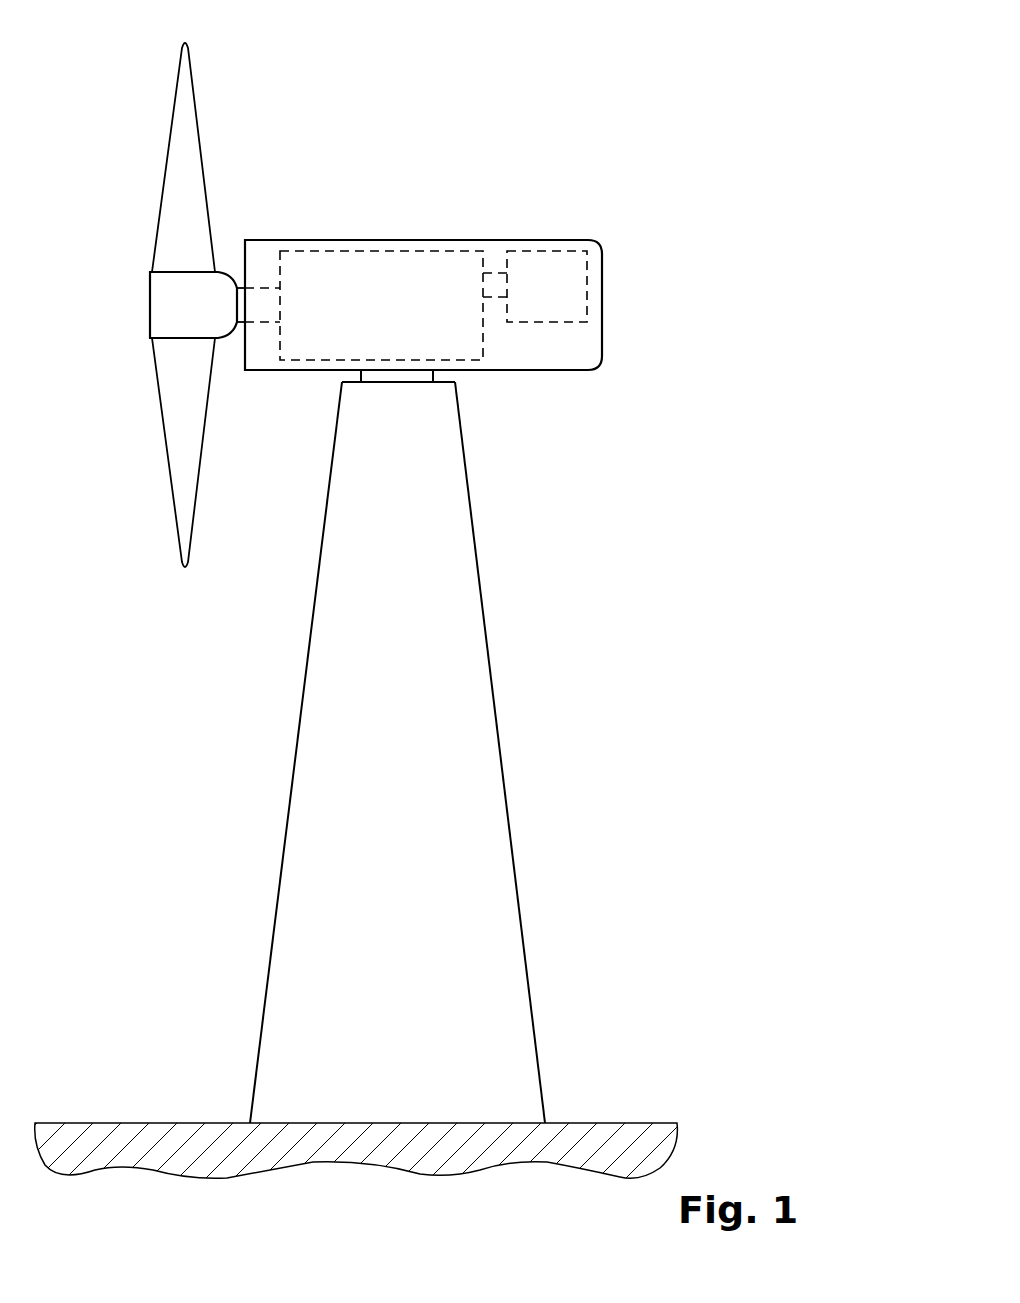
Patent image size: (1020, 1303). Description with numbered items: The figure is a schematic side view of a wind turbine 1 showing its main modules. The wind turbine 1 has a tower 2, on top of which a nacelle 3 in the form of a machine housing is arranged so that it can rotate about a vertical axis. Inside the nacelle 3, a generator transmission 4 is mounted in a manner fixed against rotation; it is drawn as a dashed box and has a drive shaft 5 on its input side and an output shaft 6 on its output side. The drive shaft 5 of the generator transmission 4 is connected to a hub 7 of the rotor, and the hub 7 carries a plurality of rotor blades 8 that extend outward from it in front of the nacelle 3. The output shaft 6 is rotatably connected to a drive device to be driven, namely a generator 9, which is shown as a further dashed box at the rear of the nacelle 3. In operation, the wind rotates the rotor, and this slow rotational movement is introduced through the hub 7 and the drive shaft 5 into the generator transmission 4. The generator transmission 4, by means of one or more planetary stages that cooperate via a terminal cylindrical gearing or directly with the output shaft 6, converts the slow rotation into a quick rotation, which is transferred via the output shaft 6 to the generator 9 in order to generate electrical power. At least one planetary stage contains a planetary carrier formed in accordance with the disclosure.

The wind turbine 1 is at (612, 101).
The tower 2 is at (460, 588).
The nacelle 3 is at (264, 240).
The generator transmission 4 is at (460, 282).
The drive shaft 5 is at (266, 318).
The output shaft 6 is at (492, 273).
The hub 7 is at (165, 303).
The rotor blades 8 is at (185, 138).
The generator 9 is at (600, 284).